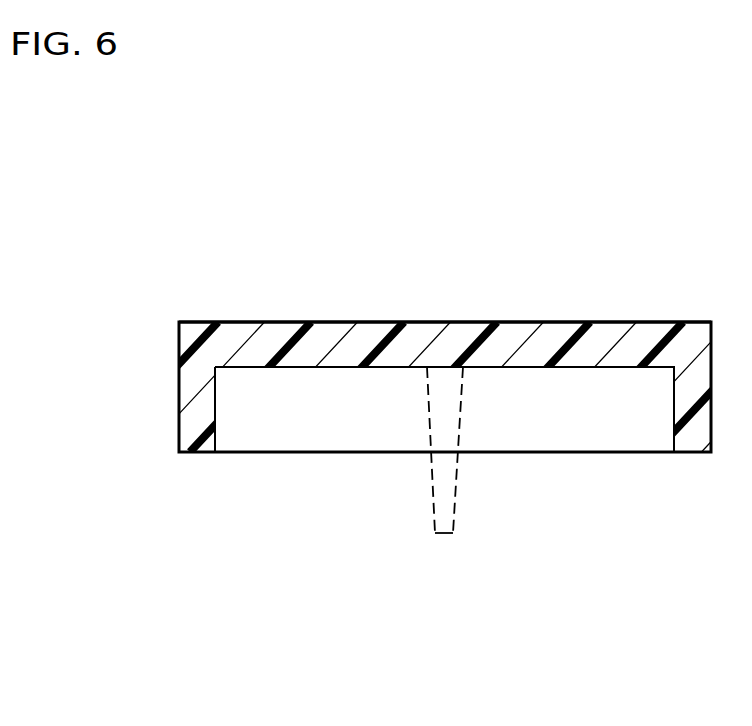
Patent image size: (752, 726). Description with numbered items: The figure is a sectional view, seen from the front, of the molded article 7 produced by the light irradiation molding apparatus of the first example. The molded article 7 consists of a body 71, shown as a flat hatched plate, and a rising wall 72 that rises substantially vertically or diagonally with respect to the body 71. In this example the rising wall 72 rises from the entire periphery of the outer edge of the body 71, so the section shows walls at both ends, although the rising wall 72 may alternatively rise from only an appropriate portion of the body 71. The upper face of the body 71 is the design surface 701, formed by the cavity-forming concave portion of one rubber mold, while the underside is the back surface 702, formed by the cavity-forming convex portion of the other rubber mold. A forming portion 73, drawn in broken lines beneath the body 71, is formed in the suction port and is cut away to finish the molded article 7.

The molded article 7 is at (285, 292).
The body 71 is at (410, 342).
The design surface 701 is at (610, 322).
The back surface 702 is at (567, 367).
The rising wall 72 is at (193, 413).
The forming portion 73 is at (440, 478).